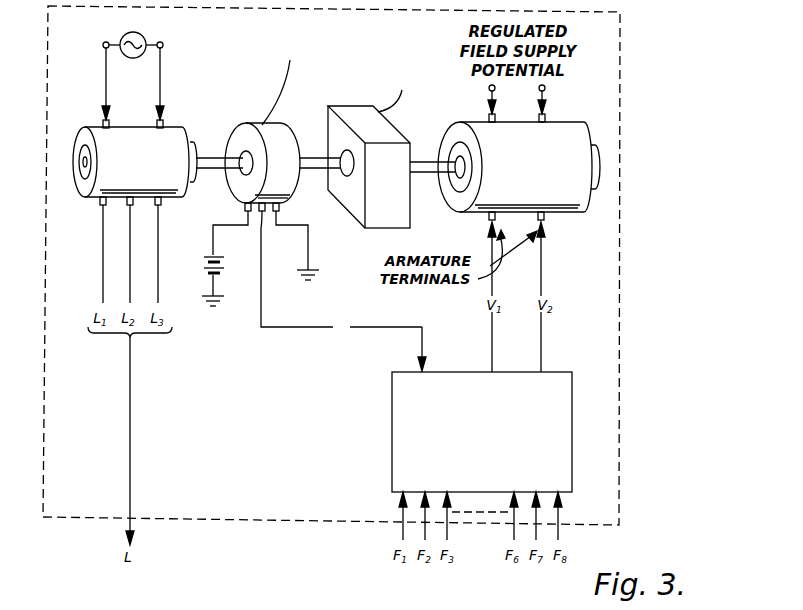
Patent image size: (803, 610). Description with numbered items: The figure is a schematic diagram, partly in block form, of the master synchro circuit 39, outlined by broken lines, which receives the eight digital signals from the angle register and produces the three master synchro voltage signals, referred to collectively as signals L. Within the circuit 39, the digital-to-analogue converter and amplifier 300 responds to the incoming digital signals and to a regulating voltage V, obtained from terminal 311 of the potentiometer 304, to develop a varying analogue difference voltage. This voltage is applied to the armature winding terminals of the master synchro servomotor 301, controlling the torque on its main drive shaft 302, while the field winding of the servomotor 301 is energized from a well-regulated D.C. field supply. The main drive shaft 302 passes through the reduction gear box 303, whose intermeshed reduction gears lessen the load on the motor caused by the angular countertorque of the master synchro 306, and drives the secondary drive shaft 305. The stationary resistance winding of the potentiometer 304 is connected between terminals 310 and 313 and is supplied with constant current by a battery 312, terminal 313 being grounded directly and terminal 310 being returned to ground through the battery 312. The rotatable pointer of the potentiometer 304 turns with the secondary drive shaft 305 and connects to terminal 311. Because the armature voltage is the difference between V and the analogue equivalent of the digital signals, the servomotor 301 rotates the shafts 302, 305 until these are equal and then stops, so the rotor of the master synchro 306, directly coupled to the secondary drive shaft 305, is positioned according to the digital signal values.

The master synchro circuit 39 is at (612, 305).
The digital-to-analogue converter and amplifier 300 is at (392, 477).
The master synchro servomotor 301 is at (561, 216).
The main drive shaft 302 is at (428, 170).
The reduction gear box 303 is at (395, 215).
The potentiometer 304 is at (281, 128).
The secondary drive shaft 305 is at (209, 168).
The master synchro 306 is at (183, 130).
The terminal 310 is at (283, 212).
The terminal 311 is at (343, 291).
The battery 312 is at (228, 265).
The terminal 313 is at (245, 208).